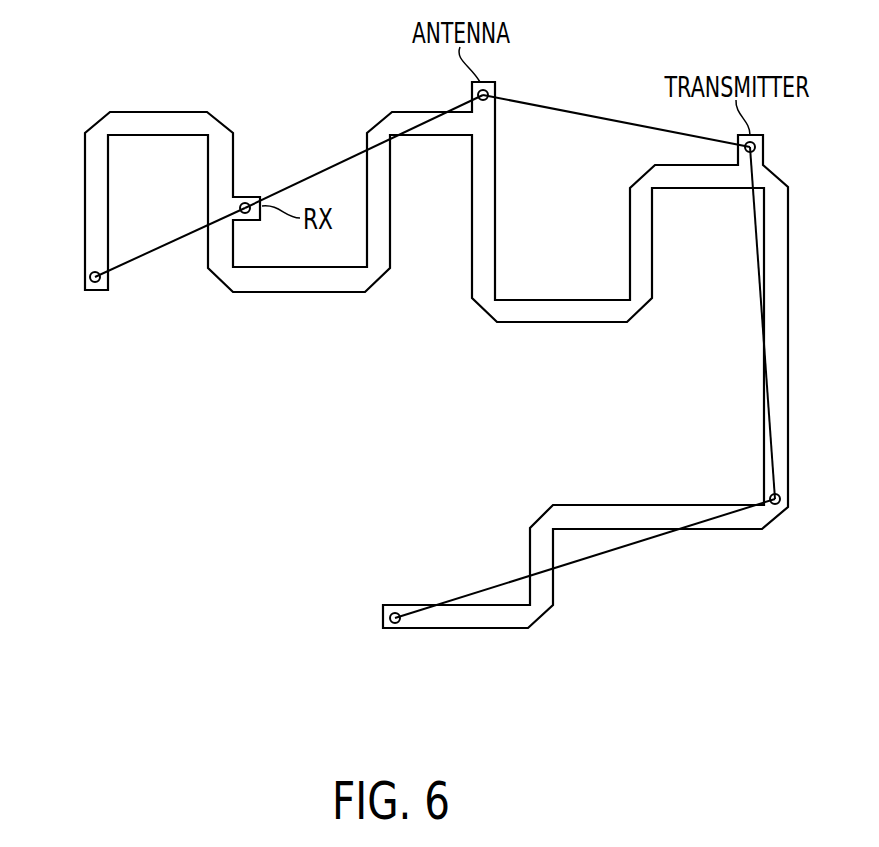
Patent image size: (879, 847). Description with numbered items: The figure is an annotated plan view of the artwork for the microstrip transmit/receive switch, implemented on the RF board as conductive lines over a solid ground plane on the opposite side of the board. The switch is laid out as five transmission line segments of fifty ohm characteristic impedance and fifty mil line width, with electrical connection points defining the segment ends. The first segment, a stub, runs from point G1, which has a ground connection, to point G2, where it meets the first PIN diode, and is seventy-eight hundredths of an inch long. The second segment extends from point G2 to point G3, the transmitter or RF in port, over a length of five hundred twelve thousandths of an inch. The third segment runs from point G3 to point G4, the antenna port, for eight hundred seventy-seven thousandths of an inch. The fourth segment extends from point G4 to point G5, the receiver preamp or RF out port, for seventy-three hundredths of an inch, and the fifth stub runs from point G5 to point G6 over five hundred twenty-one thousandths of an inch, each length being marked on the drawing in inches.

The connection point G1 is at (393, 630).
The connection point G2 is at (789, 495).
The connection point G3 is at (766, 166).
The connection point G4 is at (496, 95).
The connection point G5 is at (242, 197).
The connection point G6 is at (84, 281).